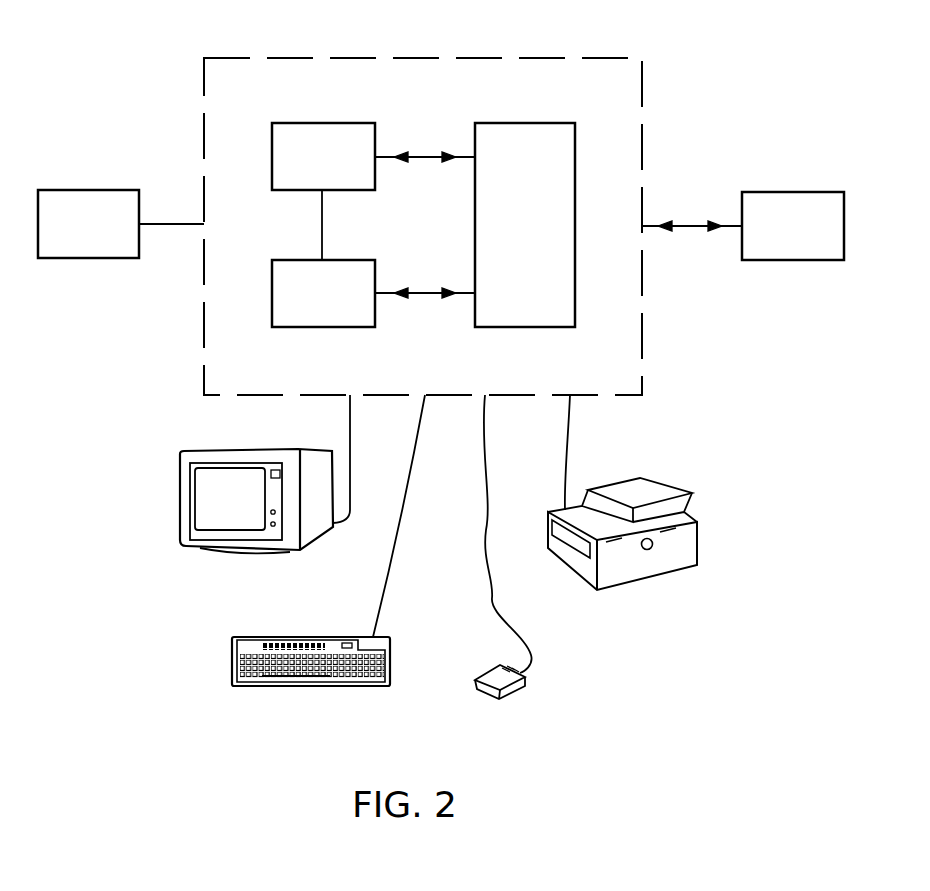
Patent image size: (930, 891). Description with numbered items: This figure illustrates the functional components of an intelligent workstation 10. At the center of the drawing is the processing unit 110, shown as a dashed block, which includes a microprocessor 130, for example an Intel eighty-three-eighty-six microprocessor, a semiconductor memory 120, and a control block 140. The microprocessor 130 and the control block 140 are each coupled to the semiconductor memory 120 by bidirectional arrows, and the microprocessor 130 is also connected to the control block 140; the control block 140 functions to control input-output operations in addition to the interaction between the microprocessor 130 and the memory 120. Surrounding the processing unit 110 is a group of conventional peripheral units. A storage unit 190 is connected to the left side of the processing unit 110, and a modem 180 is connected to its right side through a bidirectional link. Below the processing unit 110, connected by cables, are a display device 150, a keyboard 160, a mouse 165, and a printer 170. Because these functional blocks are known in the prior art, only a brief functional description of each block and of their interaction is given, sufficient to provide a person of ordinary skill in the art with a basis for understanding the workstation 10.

The workstation 10 is at (125, 90).
The processing unit 110 is at (607, 98).
The semiconductor memory 120 is at (493, 328).
The microprocessor 130 is at (310, 122).
The control block 140 is at (299, 328).
The display device 150 is at (188, 560).
The keyboard 160 is at (297, 703).
The mouse 165 is at (515, 706).
The printer 170 is at (647, 597).
The modem 180 is at (790, 200).
The storage unit 190 is at (80, 192).